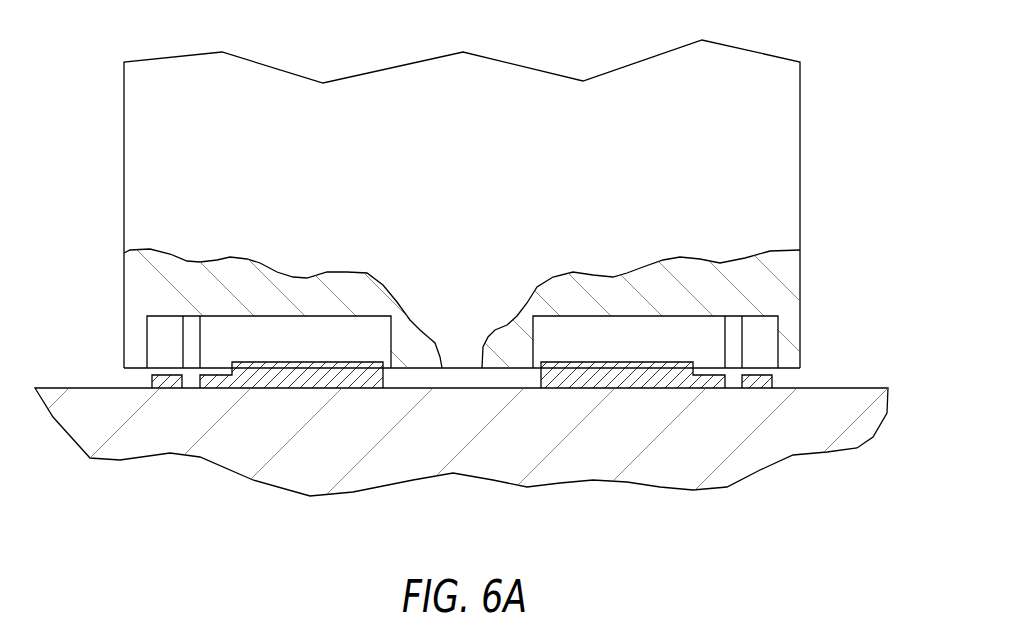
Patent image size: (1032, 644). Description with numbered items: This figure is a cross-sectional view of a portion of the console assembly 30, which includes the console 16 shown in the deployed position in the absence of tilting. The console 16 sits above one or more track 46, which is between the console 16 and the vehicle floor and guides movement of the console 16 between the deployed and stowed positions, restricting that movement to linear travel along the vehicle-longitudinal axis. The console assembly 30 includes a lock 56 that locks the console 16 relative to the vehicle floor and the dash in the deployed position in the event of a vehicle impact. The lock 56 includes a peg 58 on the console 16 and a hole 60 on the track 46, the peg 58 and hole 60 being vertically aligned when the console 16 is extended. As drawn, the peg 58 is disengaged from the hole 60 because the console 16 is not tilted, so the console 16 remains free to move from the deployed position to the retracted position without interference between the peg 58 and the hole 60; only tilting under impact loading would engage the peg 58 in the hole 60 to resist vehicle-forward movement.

The console 16 is at (800, 132).
The console assembly 30 is at (838, 188).
The peg 58 is at (182, 338).
The hole 60 is at (187, 380).
The track 46 is at (303, 378).
The lock 56 is at (190, 388).